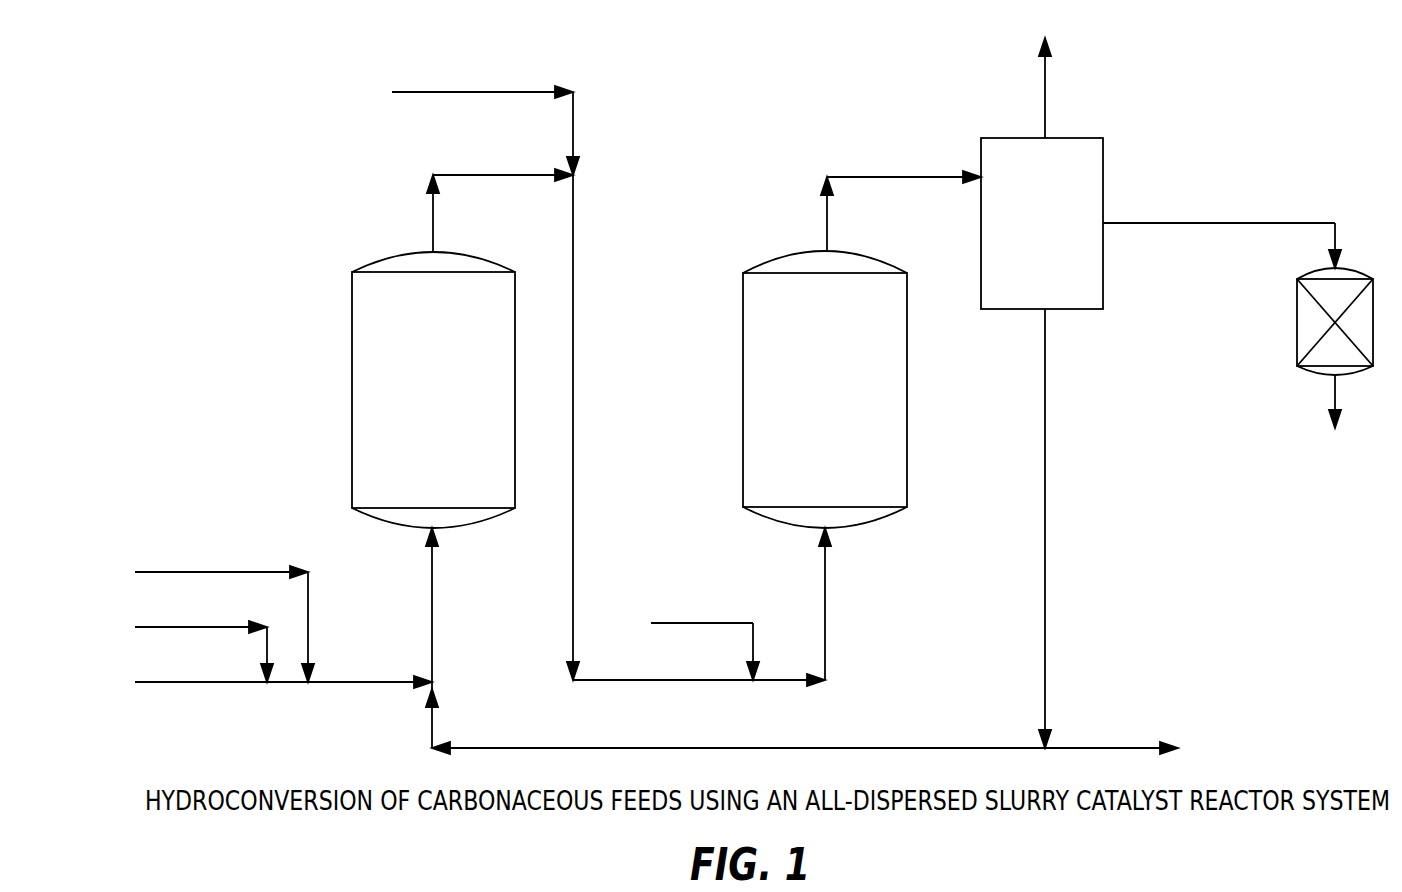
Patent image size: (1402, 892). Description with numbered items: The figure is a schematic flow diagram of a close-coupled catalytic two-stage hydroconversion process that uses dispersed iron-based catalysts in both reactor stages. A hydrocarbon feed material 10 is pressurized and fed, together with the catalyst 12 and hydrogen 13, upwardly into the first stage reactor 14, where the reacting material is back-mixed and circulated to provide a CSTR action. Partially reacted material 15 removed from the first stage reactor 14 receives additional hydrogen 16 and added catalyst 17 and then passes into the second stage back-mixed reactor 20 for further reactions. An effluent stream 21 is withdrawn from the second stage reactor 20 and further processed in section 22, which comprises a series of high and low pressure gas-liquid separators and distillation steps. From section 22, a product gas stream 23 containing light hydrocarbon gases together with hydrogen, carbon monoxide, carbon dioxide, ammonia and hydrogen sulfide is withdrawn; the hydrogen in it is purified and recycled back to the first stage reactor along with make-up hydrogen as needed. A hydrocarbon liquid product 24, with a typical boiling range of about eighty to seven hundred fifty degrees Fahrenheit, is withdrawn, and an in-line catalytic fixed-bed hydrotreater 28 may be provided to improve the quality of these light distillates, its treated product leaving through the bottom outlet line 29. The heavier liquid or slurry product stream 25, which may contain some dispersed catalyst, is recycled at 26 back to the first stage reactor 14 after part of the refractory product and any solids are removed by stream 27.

The hydrocarbon feed material 10 is at (222, 683).
The catalyst 12 is at (268, 642).
The hydrogen 13 is at (310, 620).
The first stage reactor 14 is at (419, 381).
The partially reacted material 15 is at (510, 171).
The additional hydrogen 16 is at (575, 127).
The added catalyst 17 is at (707, 625).
The second stage back-mixed reactor 20 is at (811, 387).
The effluent stream 21 is at (925, 172).
The separation and distillation section 22 is at (1034, 229).
The product gas stream 23 is at (1047, 103).
The hydrocarbon liquid product 24 is at (1258, 224).
The heavier liquid or slurry product stream 25 is at (1045, 581).
The recycle stream 26 is at (683, 748).
The refractory product removal stream 27 is at (1127, 748).
The in-line catalytic fixed-bed hydrotreater 28 is at (1297, 341).
The hydrotreated product line 29 is at (1330, 393).